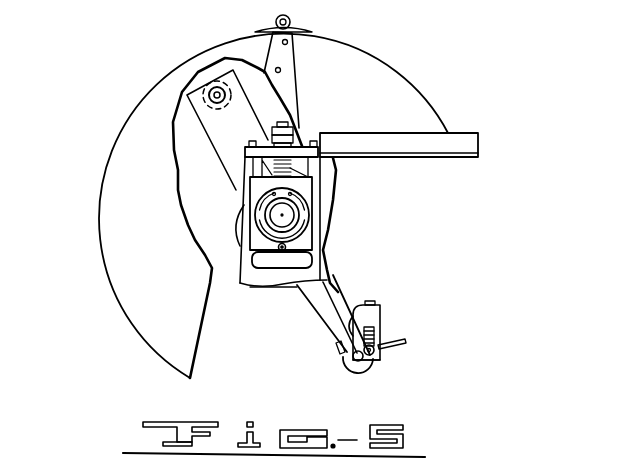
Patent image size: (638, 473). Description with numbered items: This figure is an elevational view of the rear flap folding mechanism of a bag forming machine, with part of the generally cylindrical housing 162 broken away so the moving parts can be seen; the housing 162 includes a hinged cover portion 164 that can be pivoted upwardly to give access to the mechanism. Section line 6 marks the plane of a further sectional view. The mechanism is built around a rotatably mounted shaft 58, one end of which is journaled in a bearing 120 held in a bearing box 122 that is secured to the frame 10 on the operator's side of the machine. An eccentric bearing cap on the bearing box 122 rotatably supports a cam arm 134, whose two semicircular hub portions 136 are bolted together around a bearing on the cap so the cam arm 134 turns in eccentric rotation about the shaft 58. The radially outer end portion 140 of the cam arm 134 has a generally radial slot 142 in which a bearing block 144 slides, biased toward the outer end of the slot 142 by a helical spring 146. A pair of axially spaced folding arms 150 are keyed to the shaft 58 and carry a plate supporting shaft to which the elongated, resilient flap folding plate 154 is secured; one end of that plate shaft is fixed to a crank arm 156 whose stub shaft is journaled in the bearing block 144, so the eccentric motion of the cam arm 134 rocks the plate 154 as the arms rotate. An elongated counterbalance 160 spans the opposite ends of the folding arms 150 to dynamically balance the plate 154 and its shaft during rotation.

The section line 6- 6 is at (188, 48).
The frame 10 is at (232, 286).
The shaft 58 is at (270, 217).
The bearing 120 is at (298, 218).
The bearing box 122 is at (257, 188).
The cam arm 134 is at (323, 305).
The semicircular hub portions 136 is at (238, 226).
The radially outer end portion 140 is at (380, 313).
The slot 142 is at (353, 304).
The bearing block 144 is at (382, 358).
The helical spring 146 is at (378, 332).
The folding arms 150 is at (332, 327).
The flap folding plate 154 is at (409, 334).
The crank arm 156 is at (350, 350).
The counterbalance 160 is at (209, 110).
The housing 162 is at (378, 51).
The cover portion 164 is at (149, 172).